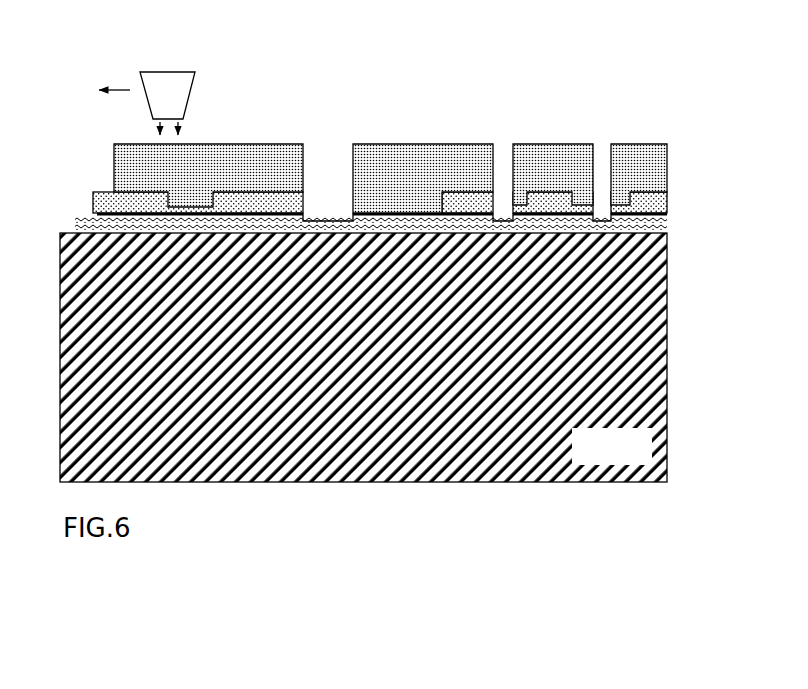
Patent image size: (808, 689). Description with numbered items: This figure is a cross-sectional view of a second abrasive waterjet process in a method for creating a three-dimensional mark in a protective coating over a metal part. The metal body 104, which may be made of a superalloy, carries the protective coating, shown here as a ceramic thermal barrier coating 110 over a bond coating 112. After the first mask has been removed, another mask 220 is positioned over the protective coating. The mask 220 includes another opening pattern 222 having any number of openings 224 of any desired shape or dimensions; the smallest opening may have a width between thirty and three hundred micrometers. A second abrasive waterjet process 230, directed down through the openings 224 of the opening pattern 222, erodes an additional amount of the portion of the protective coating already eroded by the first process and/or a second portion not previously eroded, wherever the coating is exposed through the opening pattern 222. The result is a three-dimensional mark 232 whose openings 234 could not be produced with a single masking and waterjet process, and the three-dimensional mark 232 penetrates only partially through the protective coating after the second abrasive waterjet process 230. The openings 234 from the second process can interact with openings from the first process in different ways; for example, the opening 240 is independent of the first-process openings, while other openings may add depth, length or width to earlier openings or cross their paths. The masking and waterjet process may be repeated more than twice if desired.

The metal body 104 is at (598, 458).
The ceramic thermal barrier coating 110 is at (665, 233).
The bond coating 112 is at (632, 217).
The mask 220 is at (673, 177).
The opening pattern 222 is at (272, 95).
The openings 224 is at (320, 157).
The second abrasive waterjet process 230 is at (201, 68).
The 3D mark 232 is at (492, 132).
The openings 234 is at (323, 220).
The opening 240 is at (295, 205).